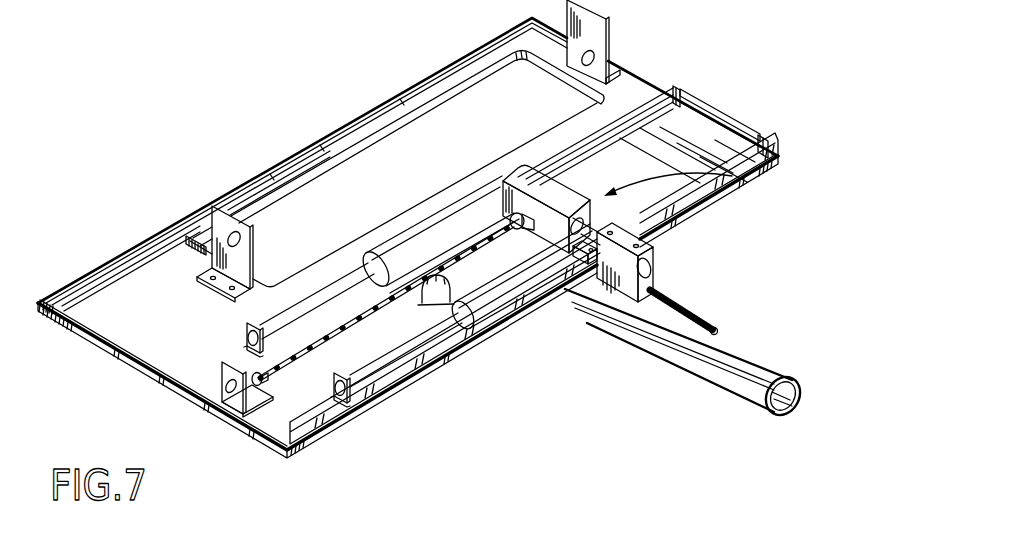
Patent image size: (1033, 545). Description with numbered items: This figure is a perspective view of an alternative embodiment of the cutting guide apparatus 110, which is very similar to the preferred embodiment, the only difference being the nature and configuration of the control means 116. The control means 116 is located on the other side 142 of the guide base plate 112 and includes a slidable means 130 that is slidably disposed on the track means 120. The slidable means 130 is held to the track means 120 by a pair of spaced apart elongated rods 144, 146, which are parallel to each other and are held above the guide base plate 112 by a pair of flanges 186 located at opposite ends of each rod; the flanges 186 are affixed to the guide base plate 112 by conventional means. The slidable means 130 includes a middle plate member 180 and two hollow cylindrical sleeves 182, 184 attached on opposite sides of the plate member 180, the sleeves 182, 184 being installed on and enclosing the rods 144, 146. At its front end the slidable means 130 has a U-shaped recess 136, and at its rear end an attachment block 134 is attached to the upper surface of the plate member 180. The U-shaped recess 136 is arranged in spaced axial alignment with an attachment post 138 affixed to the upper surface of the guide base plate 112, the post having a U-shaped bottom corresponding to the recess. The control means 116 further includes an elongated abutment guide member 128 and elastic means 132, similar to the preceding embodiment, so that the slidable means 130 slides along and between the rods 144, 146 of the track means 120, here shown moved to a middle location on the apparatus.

The cutting guide apparatus 110 is at (216, 80).
The guide base plate 112 is at (189, 329).
The control means 116 is at (558, 345).
The track means 120 is at (781, 143).
The elongated abutment guide member 128 is at (768, 352).
The slidable means 130 is at (692, 181).
The elastic means 132 is at (342, 326).
The attachment block 134 is at (553, 194).
The U-shaped recess 136 is at (427, 293).
The attachment post 138 is at (233, 400).
The other side 142 is at (113, 270).
The elongated rod 144 is at (740, 148).
The elongated rod 146 is at (655, 90).
The middle plate member 180 is at (458, 256).
The hollow cylindrical sleeve 182 is at (470, 207).
The hollow cylindrical sleeve 184 is at (497, 300).
The flange 186 is at (247, 338).